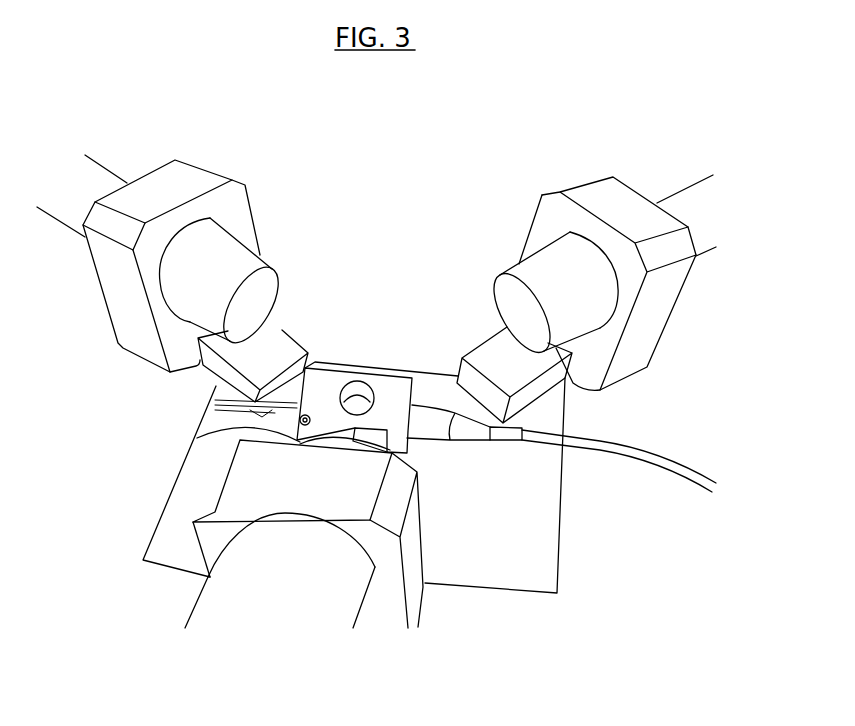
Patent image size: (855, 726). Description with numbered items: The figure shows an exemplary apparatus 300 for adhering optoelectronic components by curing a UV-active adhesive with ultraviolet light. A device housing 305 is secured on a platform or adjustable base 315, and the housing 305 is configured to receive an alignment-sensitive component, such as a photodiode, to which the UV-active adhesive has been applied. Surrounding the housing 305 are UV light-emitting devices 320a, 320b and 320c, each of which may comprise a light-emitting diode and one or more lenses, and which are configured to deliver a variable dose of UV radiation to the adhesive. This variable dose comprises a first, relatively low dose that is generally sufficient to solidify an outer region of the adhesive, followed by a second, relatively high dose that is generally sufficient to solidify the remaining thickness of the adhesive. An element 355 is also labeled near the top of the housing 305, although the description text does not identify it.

The apparatus 300 is at (662, 135).
The device housing 305 is at (357, 381).
The adjustable base 315 is at (558, 549).
The UV light-emitting device 320a is at (197, 438).
The UV light-emitting device 320b is at (262, 255).
The UV light-emitting device 320c is at (518, 268).
The fixture plate 355 is at (333, 363).